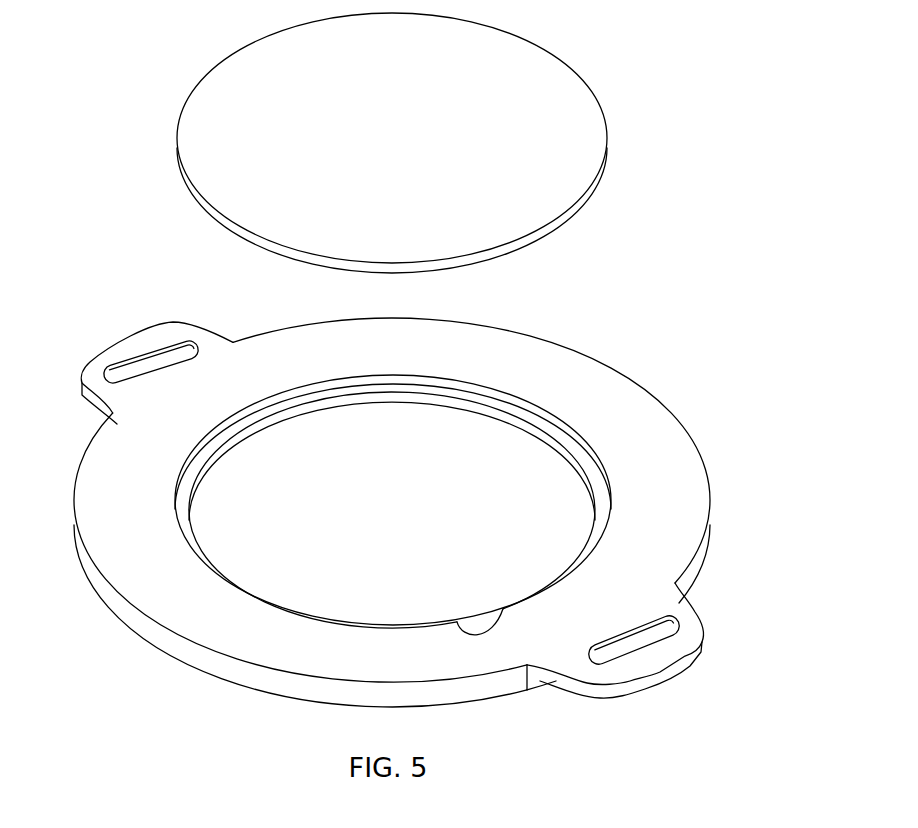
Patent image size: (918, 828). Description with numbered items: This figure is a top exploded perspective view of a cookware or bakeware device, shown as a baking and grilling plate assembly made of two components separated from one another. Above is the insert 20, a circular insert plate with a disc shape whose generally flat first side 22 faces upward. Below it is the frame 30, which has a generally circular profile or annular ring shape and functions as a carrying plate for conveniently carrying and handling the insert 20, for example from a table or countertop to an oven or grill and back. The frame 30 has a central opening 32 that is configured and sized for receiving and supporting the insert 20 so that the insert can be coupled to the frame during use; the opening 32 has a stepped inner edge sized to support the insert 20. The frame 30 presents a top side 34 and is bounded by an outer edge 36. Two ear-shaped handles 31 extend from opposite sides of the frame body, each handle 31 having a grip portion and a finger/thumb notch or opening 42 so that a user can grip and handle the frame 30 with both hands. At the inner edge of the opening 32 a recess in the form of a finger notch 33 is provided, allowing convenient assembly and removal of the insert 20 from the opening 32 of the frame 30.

The insert 20 is at (449, 138).
The first side 22 is at (218, 93).
The frame 30 is at (422, 491).
The handle 31 is at (124, 349).
The central opening 32 is at (383, 498).
The finger notch 33 is at (488, 637).
The top side 34 is at (652, 443).
The outer edge 36 is at (167, 643).
The finger/thumb notch or opening 42 is at (163, 362).